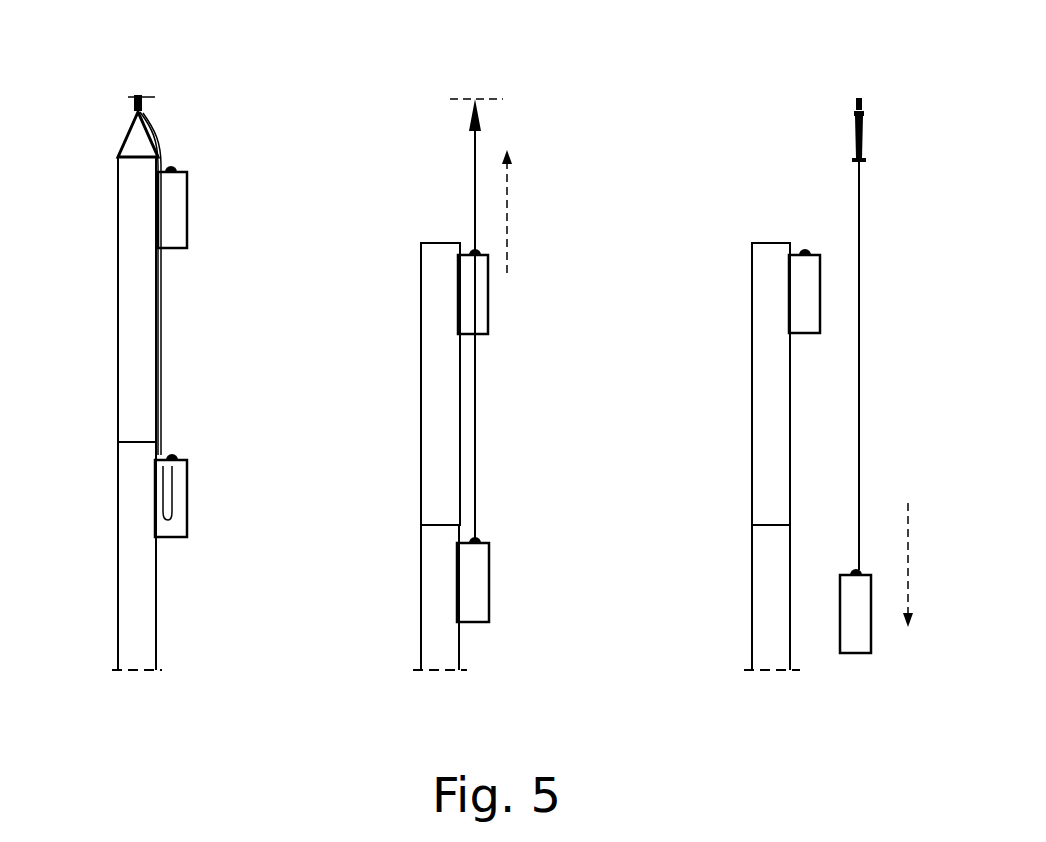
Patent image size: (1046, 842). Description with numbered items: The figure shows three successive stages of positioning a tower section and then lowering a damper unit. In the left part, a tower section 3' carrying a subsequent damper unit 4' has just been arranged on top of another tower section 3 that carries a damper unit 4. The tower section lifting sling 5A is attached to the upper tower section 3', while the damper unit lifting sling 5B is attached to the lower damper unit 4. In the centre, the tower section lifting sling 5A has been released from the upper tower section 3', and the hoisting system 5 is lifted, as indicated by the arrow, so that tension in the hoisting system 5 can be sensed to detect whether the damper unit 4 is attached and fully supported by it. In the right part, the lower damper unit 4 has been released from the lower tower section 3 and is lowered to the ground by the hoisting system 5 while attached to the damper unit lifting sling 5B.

The tower section 3 is at (424, 556).
The tower section 3' is at (417, 341).
The damper unit 4 is at (542, 561).
The damper unit 4' is at (489, 250).
The hoisting system 5 is at (138, 96).
The tower section lifting sling 5A is at (125, 140).
The damper unit lifting sling 5B is at (162, 335).